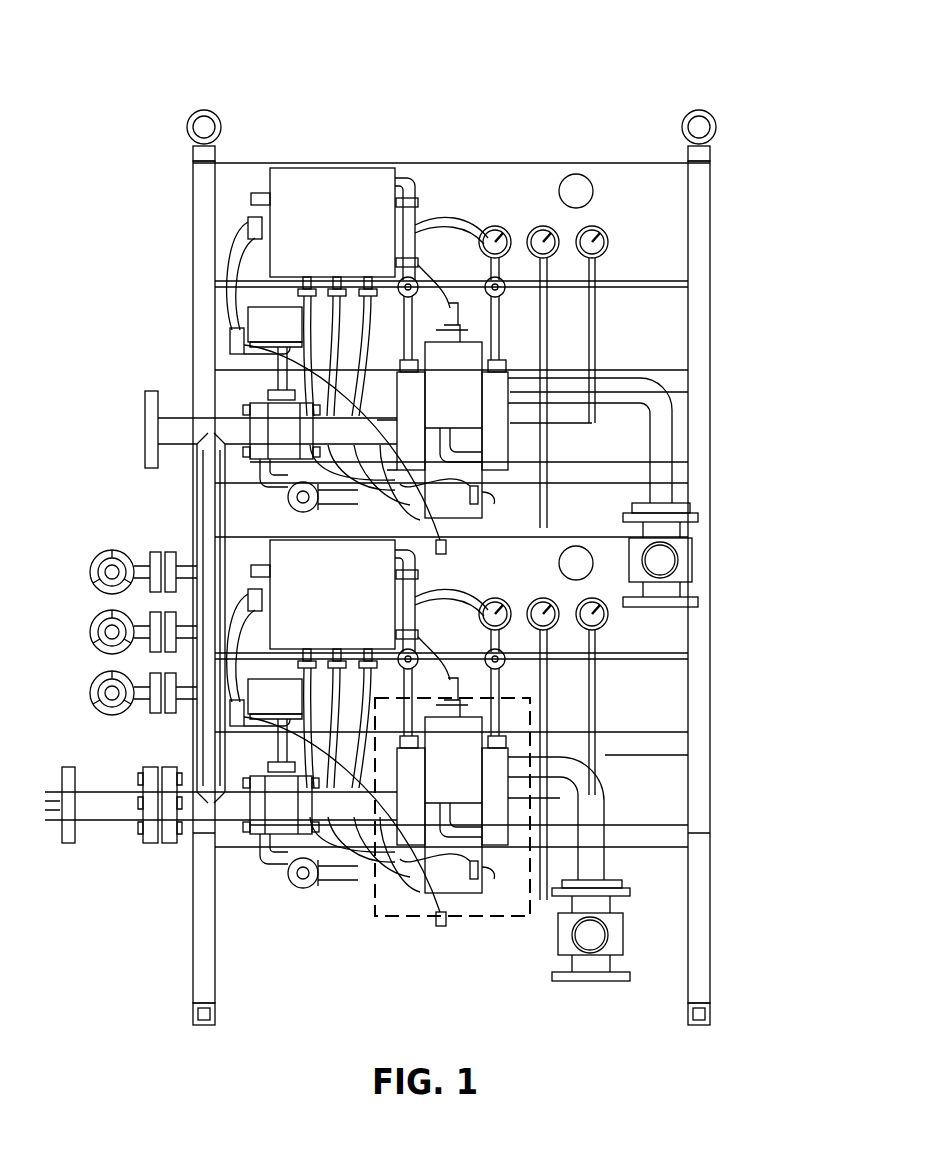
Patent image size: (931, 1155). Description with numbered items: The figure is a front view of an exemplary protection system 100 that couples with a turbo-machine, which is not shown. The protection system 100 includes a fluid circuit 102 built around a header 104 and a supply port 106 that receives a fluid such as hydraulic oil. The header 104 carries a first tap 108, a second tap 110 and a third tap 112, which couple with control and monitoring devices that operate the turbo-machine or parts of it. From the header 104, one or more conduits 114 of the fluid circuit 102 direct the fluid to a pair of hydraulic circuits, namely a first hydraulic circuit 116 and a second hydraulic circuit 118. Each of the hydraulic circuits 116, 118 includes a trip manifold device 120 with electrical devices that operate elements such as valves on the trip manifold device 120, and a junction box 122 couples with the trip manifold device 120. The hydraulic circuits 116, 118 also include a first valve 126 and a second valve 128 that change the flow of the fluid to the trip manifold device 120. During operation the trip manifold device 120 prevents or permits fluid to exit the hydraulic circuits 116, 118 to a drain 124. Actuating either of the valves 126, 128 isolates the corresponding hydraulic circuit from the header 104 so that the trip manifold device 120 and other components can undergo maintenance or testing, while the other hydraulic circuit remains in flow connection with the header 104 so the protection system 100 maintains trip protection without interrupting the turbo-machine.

The protection system 100 is at (626, 108).
The fluid circuit 102 is at (802, 338).
The header 104 is at (188, 535).
The supply port 106 is at (65, 848).
The first tap 108 is at (92, 706).
The second tap 110 is at (92, 645).
The third tap 112 is at (92, 584).
The conduits 114 is at (337, 410).
The first hydraulic circuit 116 is at (729, 370).
The second hydraulic circuit 118 is at (729, 747).
The trip manifold device 120 is at (482, 925).
The junction box 122 is at (436, 586).
The drain 124 is at (597, 985).
The first valve 126 is at (240, 828).
The second valve 128 is at (302, 890).